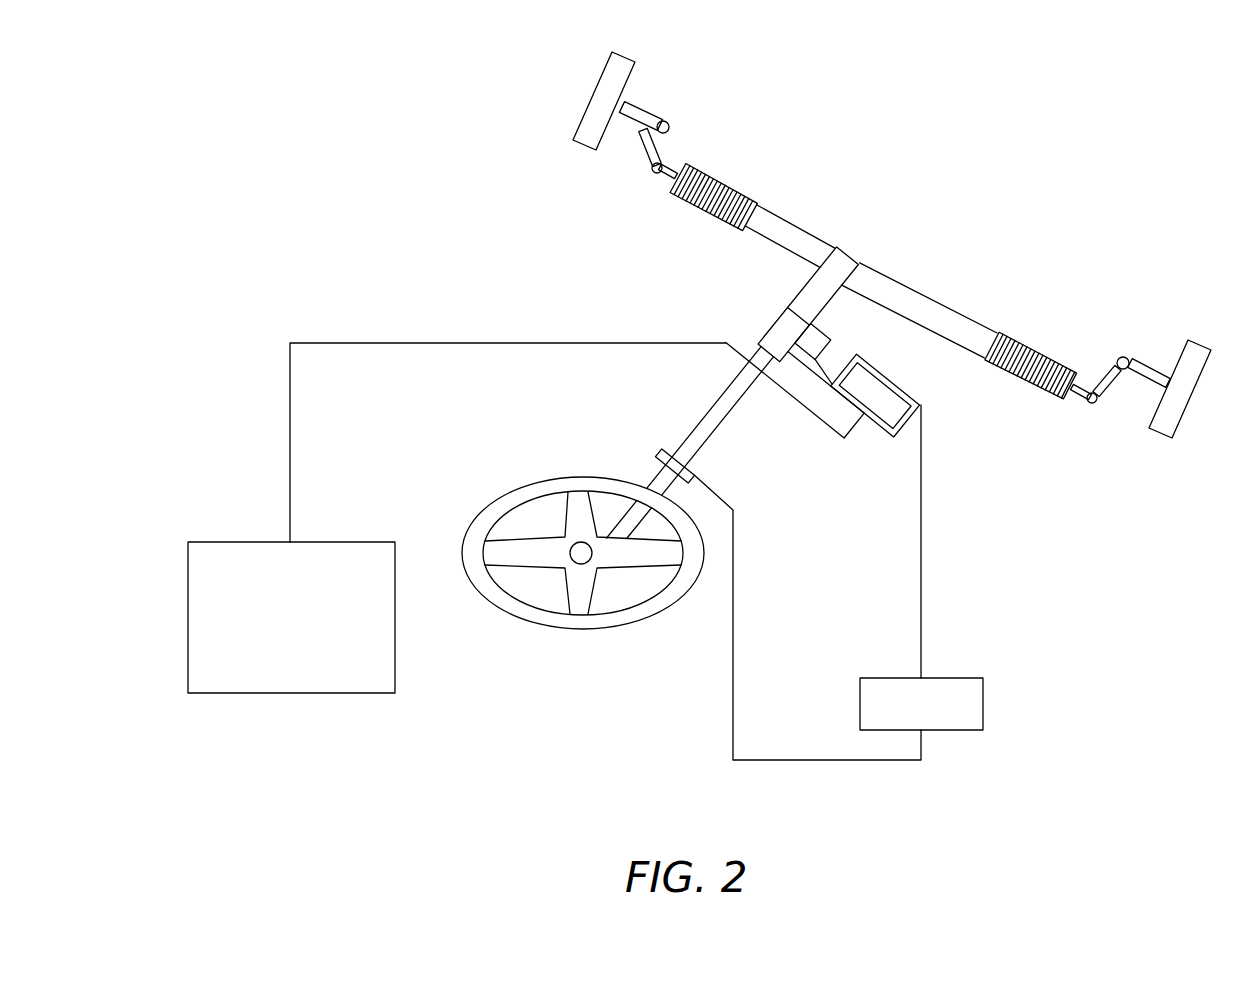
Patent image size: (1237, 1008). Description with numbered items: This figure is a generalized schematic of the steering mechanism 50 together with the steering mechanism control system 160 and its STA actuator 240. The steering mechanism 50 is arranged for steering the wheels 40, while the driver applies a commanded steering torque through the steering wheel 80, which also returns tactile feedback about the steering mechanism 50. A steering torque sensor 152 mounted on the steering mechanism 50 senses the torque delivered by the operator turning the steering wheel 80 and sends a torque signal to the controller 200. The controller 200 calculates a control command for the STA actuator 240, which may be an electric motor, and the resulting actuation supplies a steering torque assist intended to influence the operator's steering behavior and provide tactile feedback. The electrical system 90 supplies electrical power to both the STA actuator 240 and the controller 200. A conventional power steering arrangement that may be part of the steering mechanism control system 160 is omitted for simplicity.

The wheels 40 is at (582, 148).
The steering mechanism 50 is at (717, 415).
The steering wheel 80 is at (552, 630).
The electrical system 90 is at (188, 663).
The steering torque sensor 152 is at (663, 456).
The steering mechanism control system 160 is at (932, 393).
The controller 200 is at (957, 730).
The STA actuator 240 is at (877, 430).